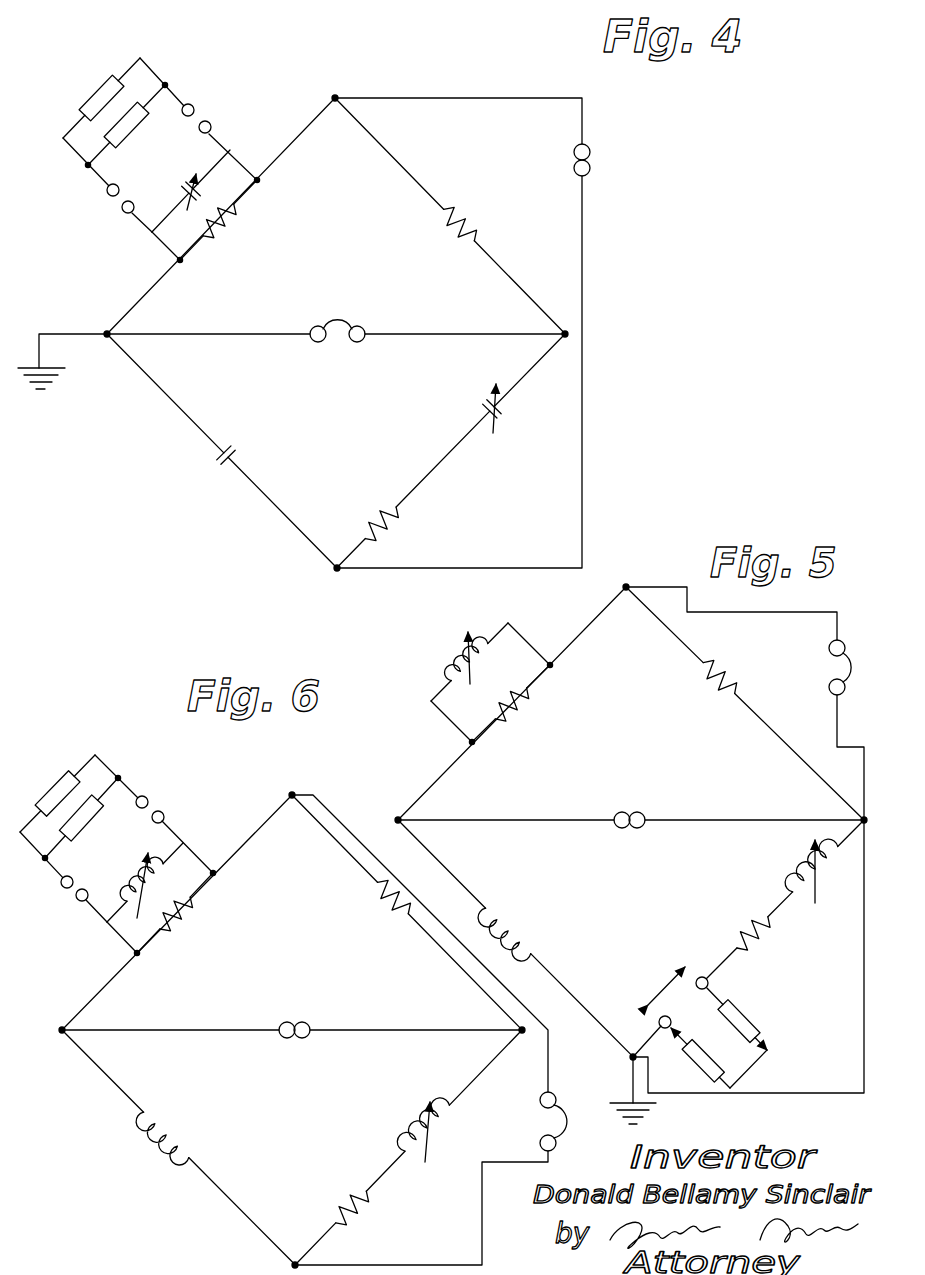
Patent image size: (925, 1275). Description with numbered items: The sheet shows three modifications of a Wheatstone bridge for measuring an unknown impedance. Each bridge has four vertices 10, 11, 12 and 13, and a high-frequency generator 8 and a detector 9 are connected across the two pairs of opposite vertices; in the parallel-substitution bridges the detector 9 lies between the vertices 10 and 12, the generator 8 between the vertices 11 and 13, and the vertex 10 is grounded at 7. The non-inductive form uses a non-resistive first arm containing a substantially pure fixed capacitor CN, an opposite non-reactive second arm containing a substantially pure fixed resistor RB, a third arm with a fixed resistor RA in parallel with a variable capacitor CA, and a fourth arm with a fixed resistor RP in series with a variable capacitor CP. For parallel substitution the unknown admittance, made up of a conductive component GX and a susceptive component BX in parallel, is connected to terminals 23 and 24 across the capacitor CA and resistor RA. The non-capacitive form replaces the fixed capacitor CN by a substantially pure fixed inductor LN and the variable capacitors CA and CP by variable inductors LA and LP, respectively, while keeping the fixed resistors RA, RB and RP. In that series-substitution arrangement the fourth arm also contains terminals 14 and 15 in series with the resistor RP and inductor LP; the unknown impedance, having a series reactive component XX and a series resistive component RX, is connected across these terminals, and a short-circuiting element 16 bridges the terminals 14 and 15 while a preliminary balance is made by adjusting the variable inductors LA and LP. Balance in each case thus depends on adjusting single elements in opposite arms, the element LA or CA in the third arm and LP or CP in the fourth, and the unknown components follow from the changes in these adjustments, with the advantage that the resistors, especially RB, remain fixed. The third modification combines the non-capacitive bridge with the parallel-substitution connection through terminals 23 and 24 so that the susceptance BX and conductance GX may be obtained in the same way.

In FIG. 4, the ground 7 is at (58, 380).
In FIG. 5, the ground 7 is at (653, 1112).
In FIG. 4, the generator 8 is at (590, 151).
In FIG. 5, the generator 8 is at (620, 812).
In FIG. 6, the generator 8 is at (288, 1022).
In FIG. 4, the detector 9 is at (334, 320).
In FIG. 5, the detector 9 is at (851, 668).
In FIG. 6, the detector 9 is at (562, 1120).
In FIG. 4, the bridge vertex 10 is at (106, 337).
In FIG. 5, the bridge vertex 10 is at (396, 819).
In FIG. 6, the bridge vertex 10 is at (61, 1034).
In FIG. 4, the bridge vertex 11 is at (333, 97).
In FIG. 5, the bridge vertex 11 is at (629, 586).
In FIG. 6, the bridge vertex 11 is at (294, 793).
In FIG. 4, the bridge vertex 12 is at (565, 331).
In FIG. 5, the bridge vertex 12 is at (863, 817).
In FIG. 6, the bridge vertex 12 is at (523, 1033).
In FIG. 4, the bridge vertex 13 is at (334, 569).
In FIG. 5, the bridge vertex 13 is at (630, 1058).
In FIG. 6, the bridge vertex 13 is at (291, 1265).
In FIG. 5, the terminal 14 is at (659, 1022).
In FIG. 5, the terminal 15 is at (704, 977).
In FIG. 5, the short-circuiting element 16 is at (668, 984).
In FIG. 4, the terminal 23 is at (123, 212).
In FIG. 6, the terminal 23 is at (77, 899).
In FIG. 4, the terminal 24 is at (211, 125).
In FIG. 6, the terminal 24 is at (164, 813).
In FIG. 4, the susceptive component BX is at (100, 90).
In FIG. 6, the susceptive component BX is at (53, 787).
In FIG. 4, the conductive component GX is at (143, 116).
In FIG. 6, the conductive component GX is at (88, 793).
In FIG. 4, the variable capacitor CA is at (177, 186).
In FIG. 4, the fixed resistor RA is at (226, 232).
In FIG. 5, the fixed resistor RA is at (519, 711).
In FIG. 6, the fixed resistor RA is at (177, 923).
In FIG. 4, the fixed resistor RB is at (467, 224).
In FIG. 5, the fixed resistor RB is at (728, 673).
In FIG. 6, the fixed resistor RB is at (390, 910).
In FIG. 4, the fixed capacitor CN is at (233, 442).
In FIG. 4, the variable capacitor CP is at (508, 408).
In FIG. 4, the fixed resistor RP is at (393, 524).
In FIG. 5, the fixed resistor RP is at (757, 939).
In FIG. 6, the fixed resistor RP is at (360, 1212).
In FIG. 5, the variable inductor LA is at (457, 658).
In FIG. 6, the variable inductor LA is at (139, 885).
In FIG. 5, the fixed inductor LN is at (515, 936).
In FIG. 6, the fixed inductor LN is at (161, 1144).
In FIG. 5, the variable inductor LP is at (814, 869).
In FIG. 6, the variable inductor LP is at (430, 1128).
In FIG. 5, the series resistive component RX is at (694, 1066).
In FIG. 5, the series reactive component XX is at (752, 1020).